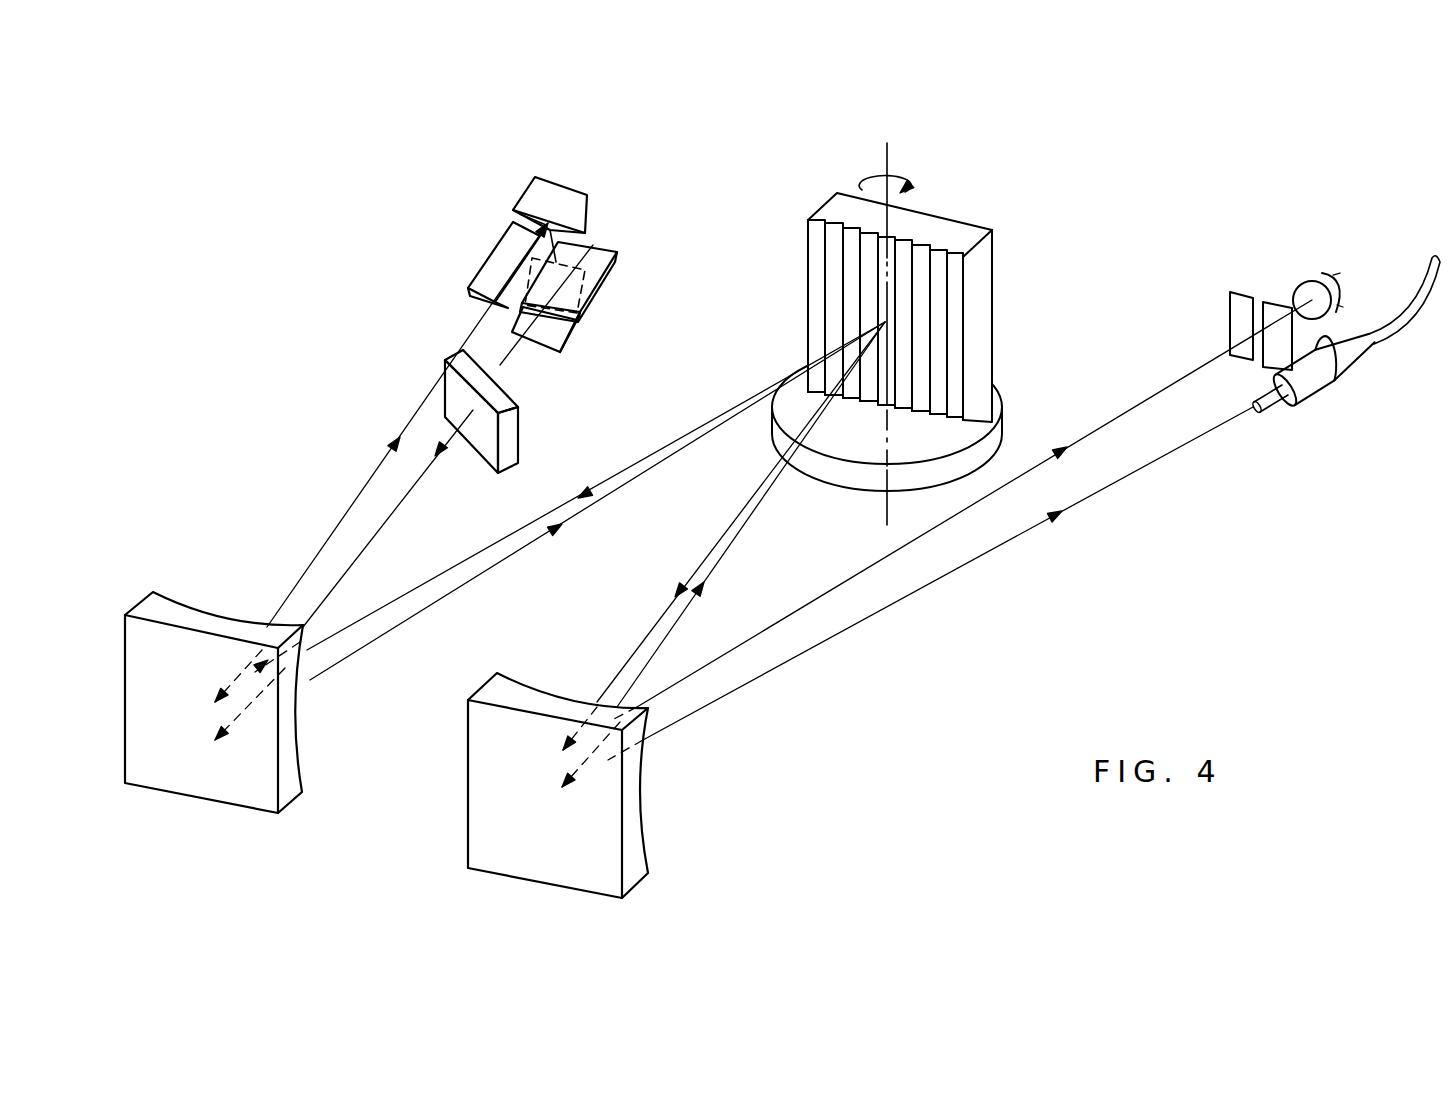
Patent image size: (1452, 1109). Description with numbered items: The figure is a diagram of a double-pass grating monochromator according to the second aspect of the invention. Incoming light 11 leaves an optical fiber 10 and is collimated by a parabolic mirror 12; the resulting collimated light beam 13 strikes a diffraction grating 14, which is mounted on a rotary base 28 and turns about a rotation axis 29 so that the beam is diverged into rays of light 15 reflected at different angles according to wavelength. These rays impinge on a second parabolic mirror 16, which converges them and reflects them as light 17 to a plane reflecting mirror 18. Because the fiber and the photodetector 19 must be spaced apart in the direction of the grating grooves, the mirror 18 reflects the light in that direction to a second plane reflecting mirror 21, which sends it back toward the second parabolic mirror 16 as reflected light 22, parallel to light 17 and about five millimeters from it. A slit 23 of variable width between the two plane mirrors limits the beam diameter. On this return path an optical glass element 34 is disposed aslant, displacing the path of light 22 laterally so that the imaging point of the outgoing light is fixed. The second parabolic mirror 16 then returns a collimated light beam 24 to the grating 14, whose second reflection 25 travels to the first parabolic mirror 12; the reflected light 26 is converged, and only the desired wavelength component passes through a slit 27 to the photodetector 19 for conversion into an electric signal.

The optical fiber 10 is at (1282, 407).
The incoming light 11 is at (905, 598).
The parabolic mirror 12 is at (475, 832).
The collimated light beam 13 is at (727, 548).
The diffraction grating 14 is at (960, 225).
The rays of light 15 is at (542, 517).
The second parabolic mirror 16 is at (248, 800).
The light 17 is at (342, 520).
The plane reflecting mirror 18 is at (567, 192).
The photodetector 19 is at (1313, 273).
The plane reflecting mirror 21 is at (580, 330).
The reflected light 22 is at (403, 497).
The slit 23 is at (623, 210).
The collimated light beam 24 is at (588, 508).
The return beam toward first mirror 25 is at (715, 547).
The reflected light 26 is at (1190, 373).
The slit 27 is at (1262, 298).
The rotary base 28 is at (1007, 407).
The rotation axis 29 is at (892, 153).
The optical glass element 34 is at (518, 420).